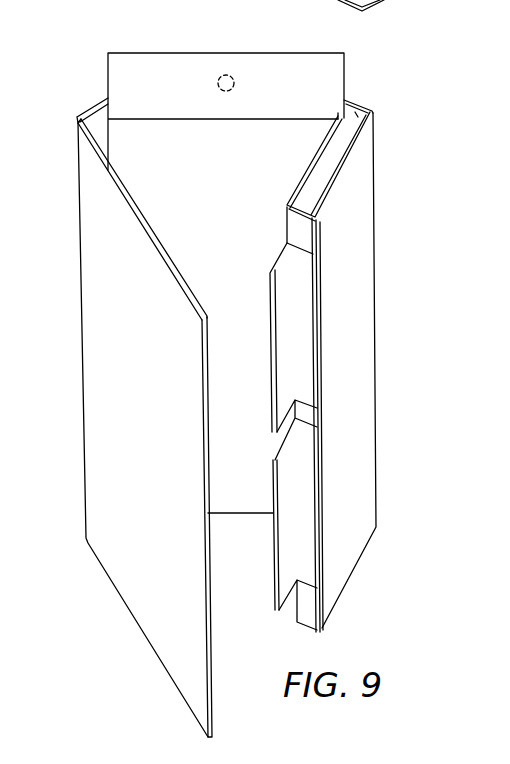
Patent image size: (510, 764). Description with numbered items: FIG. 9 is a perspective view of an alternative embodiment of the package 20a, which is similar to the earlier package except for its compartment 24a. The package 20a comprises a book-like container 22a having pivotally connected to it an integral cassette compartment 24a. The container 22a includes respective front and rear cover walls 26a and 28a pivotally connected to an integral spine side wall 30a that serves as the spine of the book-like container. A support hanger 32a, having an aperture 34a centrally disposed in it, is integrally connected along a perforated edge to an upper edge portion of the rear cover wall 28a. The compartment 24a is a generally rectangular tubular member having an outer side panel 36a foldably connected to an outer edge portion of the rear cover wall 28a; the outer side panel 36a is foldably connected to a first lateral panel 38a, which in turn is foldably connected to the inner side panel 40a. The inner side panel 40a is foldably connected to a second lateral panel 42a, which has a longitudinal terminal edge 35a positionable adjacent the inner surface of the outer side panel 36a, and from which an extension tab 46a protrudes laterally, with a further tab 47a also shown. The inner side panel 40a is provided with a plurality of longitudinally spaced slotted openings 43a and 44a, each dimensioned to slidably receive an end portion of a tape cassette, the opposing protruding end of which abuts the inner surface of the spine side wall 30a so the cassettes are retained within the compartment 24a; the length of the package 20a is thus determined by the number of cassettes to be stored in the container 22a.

The package 20a is at (409, 164).
The book-like container 22a is at (96, 240).
The cassette compartment 24a is at (365, 237).
The front cover wall 26a is at (113, 400).
The rear cover wall 28a is at (243, 507).
The spine side wall 30a is at (92, 121).
The support hanger 32a is at (356, 71).
The aperture 34a is at (226, 74).
The longitudinal terminal edge 35a is at (338, 113).
The outer side panel 36a is at (362, 111).
The first lateral panel 38a is at (370, 400).
The inner side panel 40a is at (293, 224).
The second lateral panel 42a is at (318, 143).
The slotted opening 43a is at (306, 562).
The slotted opening 44a is at (306, 387).
The extension tab 46a is at (280, 259).
The lower flange 47a is at (272, 483).